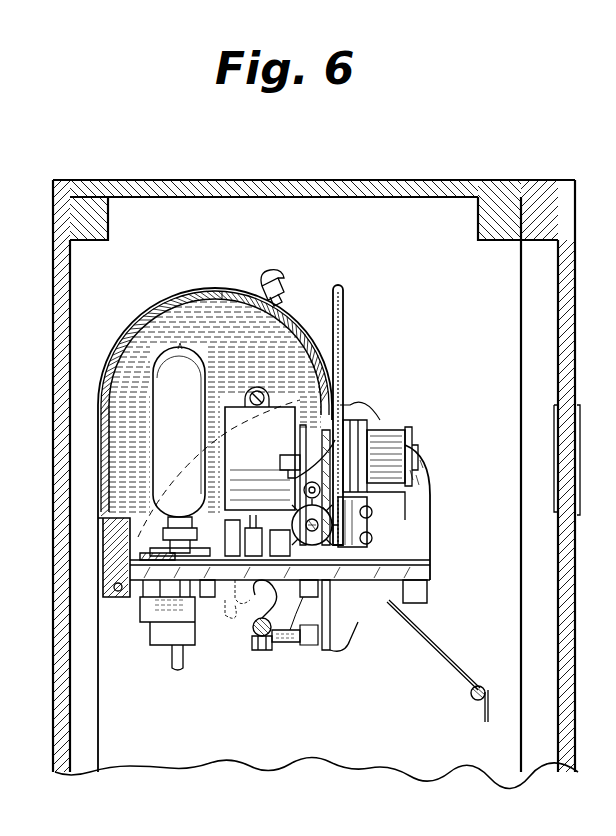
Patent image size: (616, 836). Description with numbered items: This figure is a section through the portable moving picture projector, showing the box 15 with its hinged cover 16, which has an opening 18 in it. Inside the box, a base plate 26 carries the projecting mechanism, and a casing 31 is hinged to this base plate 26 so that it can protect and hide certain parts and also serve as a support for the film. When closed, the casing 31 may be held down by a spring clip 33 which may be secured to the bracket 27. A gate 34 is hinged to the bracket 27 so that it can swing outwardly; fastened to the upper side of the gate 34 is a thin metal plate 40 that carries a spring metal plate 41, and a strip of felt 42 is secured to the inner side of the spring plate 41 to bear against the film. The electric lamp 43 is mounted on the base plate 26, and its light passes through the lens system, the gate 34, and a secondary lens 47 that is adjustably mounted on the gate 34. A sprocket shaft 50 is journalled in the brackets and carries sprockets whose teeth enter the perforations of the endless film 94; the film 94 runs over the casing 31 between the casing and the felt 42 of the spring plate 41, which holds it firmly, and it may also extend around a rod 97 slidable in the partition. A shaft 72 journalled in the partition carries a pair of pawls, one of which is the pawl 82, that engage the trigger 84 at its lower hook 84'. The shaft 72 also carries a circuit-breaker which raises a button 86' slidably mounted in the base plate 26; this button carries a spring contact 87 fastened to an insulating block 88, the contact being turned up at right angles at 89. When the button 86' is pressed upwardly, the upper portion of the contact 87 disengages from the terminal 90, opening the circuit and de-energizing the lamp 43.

The box 15 is at (83, 330).
The cover 16 is at (540, 193).
The opening 18 is at (555, 460).
The base plate 26 is at (167, 571).
The bracket 27 is at (412, 523).
The casing 31 is at (189, 283).
The spring clip 33 is at (280, 300).
The gate 34 is at (350, 512).
The thin metal plate 40 is at (345, 358).
The spring metal plate 41 is at (318, 345).
The strip of felt 42 is at (333, 328).
The electric lamp 43 is at (180, 449).
The secondary lens 47 is at (395, 453).
The sprocket shaft 50 is at (368, 542).
The shaft 72 is at (258, 632).
The pawl 82 is at (303, 642).
The trigger 84 is at (340, 540).
The lower hook 84' is at (358, 616).
The button 86' is at (324, 615).
The spring contact 87 is at (350, 556).
The insulating block 88 is at (145, 560).
The turned-up portion of contact 89 is at (219, 471).
The terminal 90 is at (337, 407).
The endless film 94 is at (222, 295).
The rod 97 is at (479, 687).